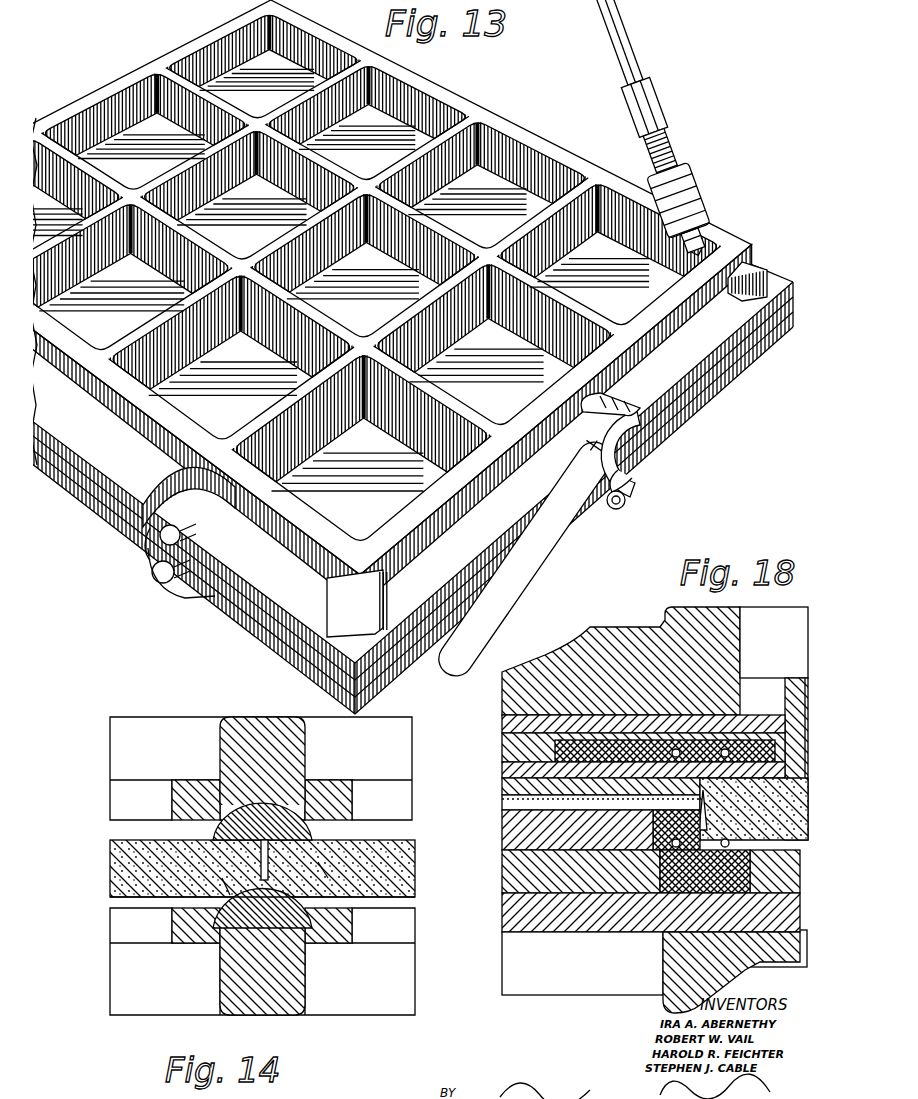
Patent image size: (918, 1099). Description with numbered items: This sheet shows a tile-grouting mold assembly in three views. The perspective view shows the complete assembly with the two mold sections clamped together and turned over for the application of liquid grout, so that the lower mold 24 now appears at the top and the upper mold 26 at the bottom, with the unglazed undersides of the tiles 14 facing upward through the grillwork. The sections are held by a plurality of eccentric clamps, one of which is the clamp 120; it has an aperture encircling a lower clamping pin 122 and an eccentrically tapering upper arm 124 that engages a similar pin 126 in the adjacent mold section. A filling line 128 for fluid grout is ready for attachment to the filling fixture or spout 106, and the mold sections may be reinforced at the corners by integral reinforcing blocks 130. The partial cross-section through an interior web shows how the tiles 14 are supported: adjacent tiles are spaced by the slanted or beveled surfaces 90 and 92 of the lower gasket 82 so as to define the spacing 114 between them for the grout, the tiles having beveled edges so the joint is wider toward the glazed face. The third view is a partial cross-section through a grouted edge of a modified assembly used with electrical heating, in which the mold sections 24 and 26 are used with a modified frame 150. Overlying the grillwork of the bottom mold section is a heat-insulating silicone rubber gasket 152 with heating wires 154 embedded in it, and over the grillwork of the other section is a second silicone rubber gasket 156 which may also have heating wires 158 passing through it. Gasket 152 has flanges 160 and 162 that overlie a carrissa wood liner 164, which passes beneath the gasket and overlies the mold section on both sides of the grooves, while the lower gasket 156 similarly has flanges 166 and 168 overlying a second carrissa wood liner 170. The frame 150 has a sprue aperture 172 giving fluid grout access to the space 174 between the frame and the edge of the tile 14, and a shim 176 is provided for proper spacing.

In FIG. 13, the tiles 14 is at (233, 236).
In FIG. 14, the tiles 14 is at (110, 860).
In FIG. 18, the tiles 14 is at (760, 806).
In FIG. 13, the lower mold section 24 is at (470, 108).
In FIG. 14, the lower mold section 24 is at (222, 750).
In FIG. 18, the lower mold section 24 is at (668, 612).
In FIG. 13, the upper mold section 26 is at (262, 648).
In FIG. 14, the upper mold section 26 is at (292, 977).
In FIG. 18, the upper mold section 26 is at (662, 973).
In FIG. 14, the lower gasket 82 is at (285, 800).
In FIG. 14, the slanted surface 90 is at (215, 874).
In FIG. 14, the slanted surface 92 is at (314, 866).
In FIG. 13, the filling fixture 106 is at (706, 236).
In FIG. 14, the spacing 114 is at (272, 852).
In FIG. 13, the eccentric clamp 120 is at (556, 568).
In FIG. 13, the lower clamping pin 122 is at (627, 500).
In FIG. 13, the eccentrically tapering upper arm 124 is at (632, 465).
In FIG. 13, the pin 126 is at (660, 446).
In FIG. 13, the filling line 128 is at (656, 100).
In FIG. 13, the reinforcing blocks 130 is at (334, 598).
In FIG. 14, the reinforcing blocks 130 is at (118, 899).
In FIG. 18, the frame 150 is at (516, 804).
In FIG. 18, the silicone rubber gasket 152 is at (648, 698).
In FIG. 18, the heating wires 154 is at (730, 740).
In FIG. 18, the second silicone rubber gasket 156 is at (651, 944).
In FIG. 18, the heating wires 158 is at (705, 869).
In FIG. 18, the flange 160 is at (592, 735).
In FIG. 18, the flange 162 is at (768, 740).
In FIG. 18, the carrissa wood liner 164 is at (792, 680).
In FIG. 18, the flange 166 is at (758, 812).
In FIG. 18, the flange 168 is at (577, 830).
In FIG. 18, the second carrissa wood liner 170 is at (516, 872).
In FIG. 18, the sprue aperture 172 is at (516, 770).
In FIG. 18, the space 174 is at (760, 768).
In FIG. 18, the shim 176 is at (516, 742).